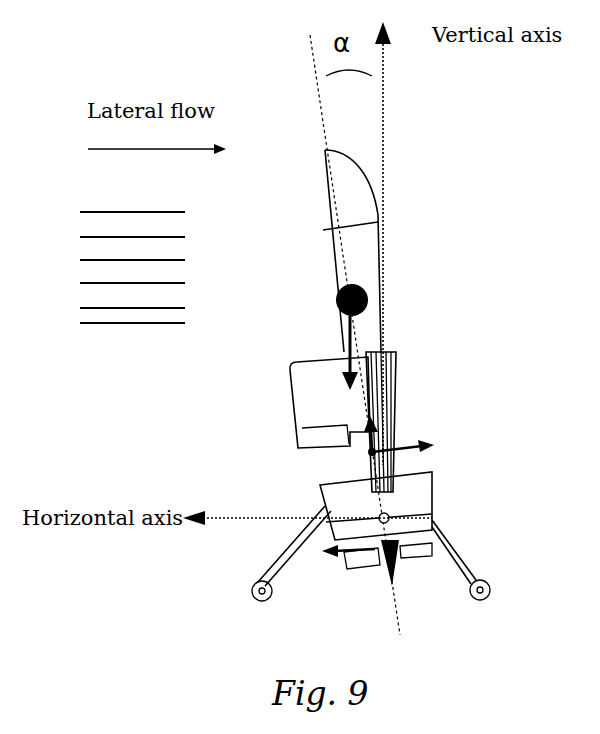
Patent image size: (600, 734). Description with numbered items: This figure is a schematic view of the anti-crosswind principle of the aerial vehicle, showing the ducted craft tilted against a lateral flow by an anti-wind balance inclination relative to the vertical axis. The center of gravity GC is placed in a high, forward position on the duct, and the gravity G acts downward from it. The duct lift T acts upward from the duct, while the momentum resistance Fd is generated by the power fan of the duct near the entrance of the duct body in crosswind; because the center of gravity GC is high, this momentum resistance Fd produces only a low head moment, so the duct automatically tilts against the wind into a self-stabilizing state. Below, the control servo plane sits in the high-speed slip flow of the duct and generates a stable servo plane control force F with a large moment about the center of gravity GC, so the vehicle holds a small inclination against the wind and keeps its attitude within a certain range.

The center of gravity GC is at (323, 300).
The gravity G is at (334, 355).
The duct lift T is at (354, 446).
The momentum resistance Fd is at (427, 439).
The servo plane control force F is at (348, 566).